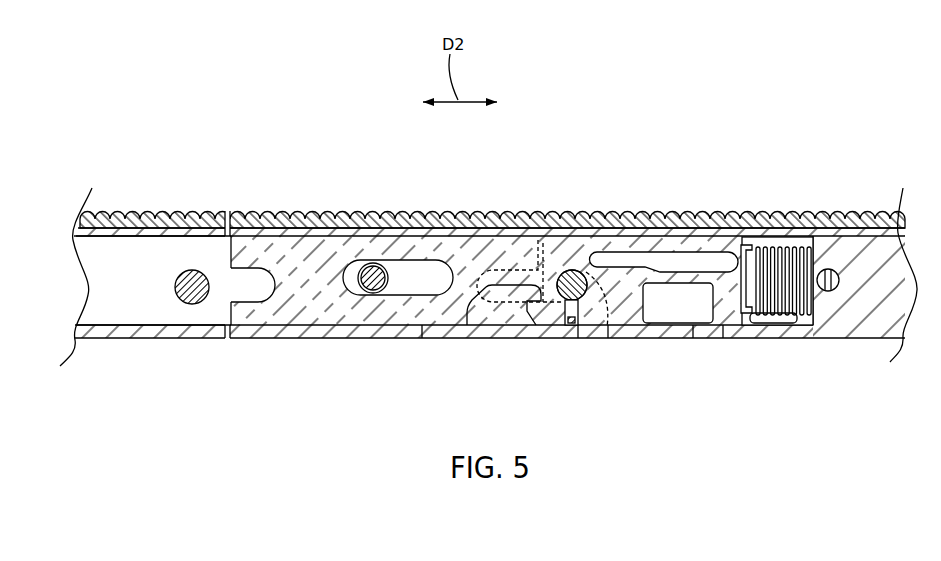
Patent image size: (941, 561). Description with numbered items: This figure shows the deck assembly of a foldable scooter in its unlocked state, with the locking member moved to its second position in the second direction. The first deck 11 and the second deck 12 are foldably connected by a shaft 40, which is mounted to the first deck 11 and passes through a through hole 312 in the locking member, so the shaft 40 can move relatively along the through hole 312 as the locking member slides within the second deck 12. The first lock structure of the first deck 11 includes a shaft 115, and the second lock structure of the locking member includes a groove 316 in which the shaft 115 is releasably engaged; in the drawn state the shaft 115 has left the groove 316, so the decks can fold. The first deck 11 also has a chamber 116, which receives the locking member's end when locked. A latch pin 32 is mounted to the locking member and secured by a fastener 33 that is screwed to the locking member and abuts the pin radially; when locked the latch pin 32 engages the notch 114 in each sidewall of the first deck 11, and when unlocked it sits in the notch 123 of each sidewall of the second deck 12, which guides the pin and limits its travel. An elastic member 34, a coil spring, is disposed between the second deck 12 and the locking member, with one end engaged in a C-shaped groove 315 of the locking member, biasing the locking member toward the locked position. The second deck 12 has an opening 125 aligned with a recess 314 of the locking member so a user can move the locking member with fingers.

The first deck 11 is at (183, 222).
The second deck 12 is at (815, 215).
The latch pin 32 is at (572, 280).
The fastener 33 is at (573, 316).
The elastic member 34 is at (777, 240).
The shaft 40 is at (373, 276).
The notch 114 is at (510, 293).
The shaft 115 is at (185, 301).
The chamber 116 is at (163, 258).
The notch 123 is at (604, 330).
The opening 125 is at (662, 330).
The through hole 312 is at (423, 275).
The recess 314 is at (700, 307).
The C-shaped groove 315 is at (748, 244).
The groove 316 is at (253, 293).